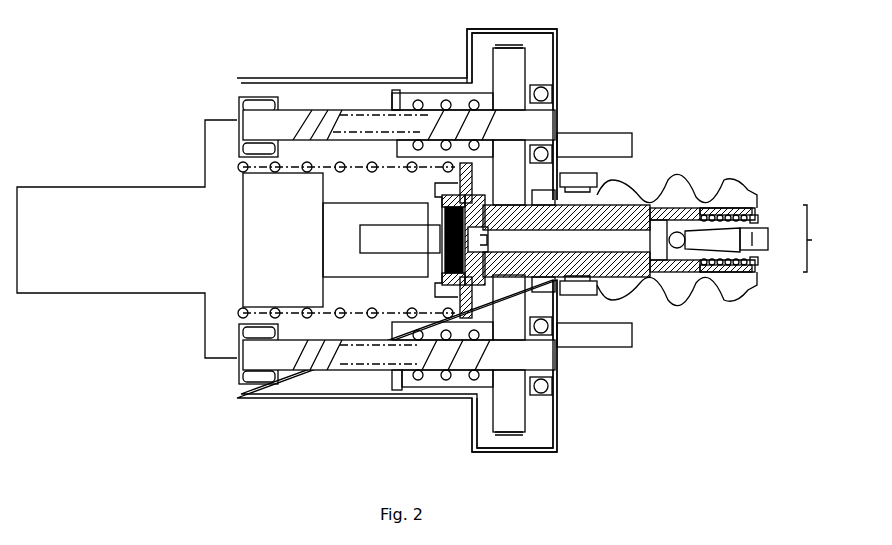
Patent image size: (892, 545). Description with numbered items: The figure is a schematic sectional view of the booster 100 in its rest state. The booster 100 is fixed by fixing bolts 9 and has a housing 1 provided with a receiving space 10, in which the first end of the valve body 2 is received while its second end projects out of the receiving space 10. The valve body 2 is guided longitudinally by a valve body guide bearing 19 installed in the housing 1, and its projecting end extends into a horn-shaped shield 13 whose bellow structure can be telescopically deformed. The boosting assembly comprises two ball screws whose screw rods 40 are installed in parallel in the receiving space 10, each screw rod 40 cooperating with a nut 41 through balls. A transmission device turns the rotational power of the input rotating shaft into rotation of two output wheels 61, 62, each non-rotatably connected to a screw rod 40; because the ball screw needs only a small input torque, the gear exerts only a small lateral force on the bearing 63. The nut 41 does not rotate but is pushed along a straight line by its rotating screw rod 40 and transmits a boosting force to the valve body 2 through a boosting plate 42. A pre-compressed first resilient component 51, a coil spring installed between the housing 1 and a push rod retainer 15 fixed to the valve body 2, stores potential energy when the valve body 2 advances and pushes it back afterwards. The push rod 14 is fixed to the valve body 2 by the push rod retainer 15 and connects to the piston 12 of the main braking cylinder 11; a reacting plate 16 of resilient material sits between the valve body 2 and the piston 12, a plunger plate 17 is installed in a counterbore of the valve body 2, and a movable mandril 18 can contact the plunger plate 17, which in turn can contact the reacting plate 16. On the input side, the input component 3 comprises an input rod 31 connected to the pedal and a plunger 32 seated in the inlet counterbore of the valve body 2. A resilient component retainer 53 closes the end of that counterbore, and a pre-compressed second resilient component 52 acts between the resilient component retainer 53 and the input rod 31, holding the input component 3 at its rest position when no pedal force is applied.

The housing 1 is at (236, 80).
The valve body 2 is at (657, 274).
The input component 3 is at (783, 238).
The fixing bolts 9 is at (593, 140).
The receiving space 10 is at (543, 73).
The main braking cylinder 11 is at (250, 272).
The piston 12 is at (372, 205).
The shield 13 is at (653, 182).
The push rod 14 is at (403, 253).
The push rod retainer 15 is at (403, 390).
The reacting plate 16 is at (455, 282).
The plunger plate 17 is at (471, 322).
The mandril 18 is at (548, 292).
The valve body guide bearing 19 is at (598, 196).
The input rod 31 is at (762, 212).
The plunger 32 is at (716, 277).
The screw rod 40 is at (258, 128).
The nut 41 is at (477, 100).
The boosting plate 42 is at (395, 90).
The first resilient component 51 is at (368, 162).
The second resilient component 52 is at (740, 210).
The resilient component retainer 53 is at (705, 210).
The output wheel 61 is at (522, 53).
The output wheel 62 is at (523, 423).
The bearing 63 is at (550, 98).
The booster 100 is at (669, 51).